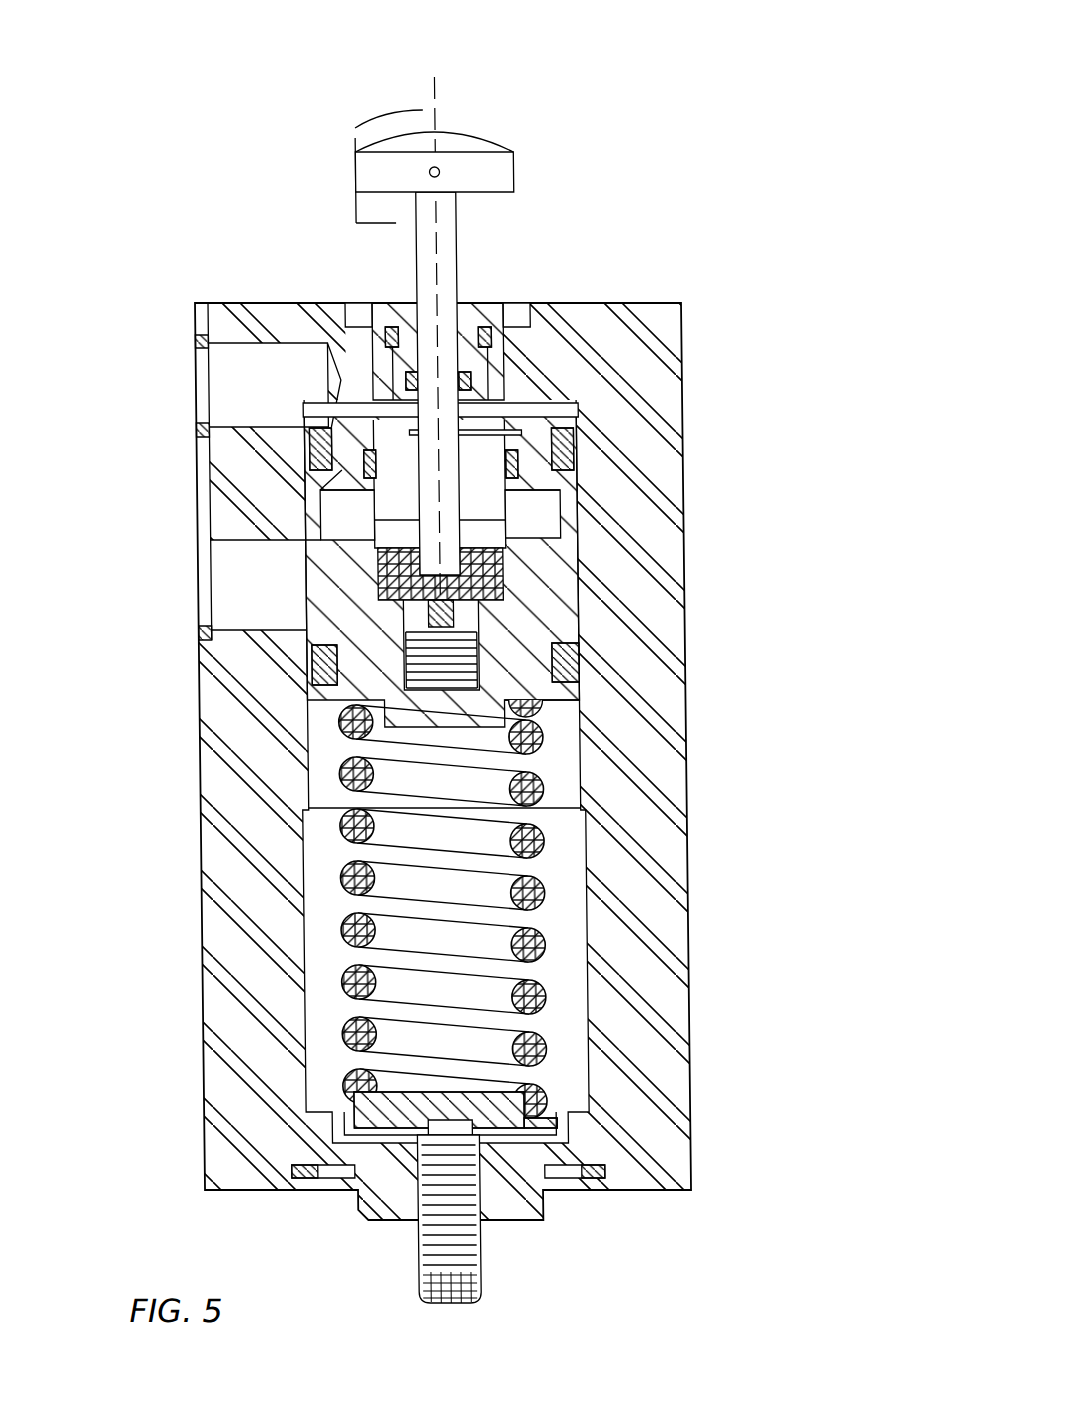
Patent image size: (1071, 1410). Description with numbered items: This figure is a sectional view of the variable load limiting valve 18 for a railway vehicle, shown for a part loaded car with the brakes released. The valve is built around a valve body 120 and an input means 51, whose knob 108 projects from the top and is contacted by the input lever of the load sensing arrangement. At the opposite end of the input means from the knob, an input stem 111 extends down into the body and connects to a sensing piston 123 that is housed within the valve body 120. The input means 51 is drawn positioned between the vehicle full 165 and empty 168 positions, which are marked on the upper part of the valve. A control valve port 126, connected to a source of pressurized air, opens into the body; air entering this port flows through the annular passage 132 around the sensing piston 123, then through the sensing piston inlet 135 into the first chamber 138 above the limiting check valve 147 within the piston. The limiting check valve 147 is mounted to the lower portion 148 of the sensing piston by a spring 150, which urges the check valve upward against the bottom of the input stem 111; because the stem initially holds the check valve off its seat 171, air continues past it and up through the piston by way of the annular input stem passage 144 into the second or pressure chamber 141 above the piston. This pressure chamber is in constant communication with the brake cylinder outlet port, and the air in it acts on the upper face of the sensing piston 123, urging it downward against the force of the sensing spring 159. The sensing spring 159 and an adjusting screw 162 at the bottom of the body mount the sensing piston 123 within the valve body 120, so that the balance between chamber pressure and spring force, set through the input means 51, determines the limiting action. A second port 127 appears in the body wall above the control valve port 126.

The variable load limiting valve 18 is at (800, 46).
The input means 51 is at (502, 106).
The knob 108 is at (512, 164).
The input stem 111 is at (463, 257).
The valve body 120 is at (690, 785).
The sensing piston 123 is at (306, 707).
The control valve port 126 is at (235, 590).
The upper port 127 is at (215, 380).
The annular passage 132 is at (495, 526).
The sensing piston inlet 135 is at (392, 510).
The first chamber 138 is at (517, 549).
The second chamber 141 is at (526, 395).
The annular input stem passage 144 is at (513, 483).
The limiting check valve 147 is at (398, 609).
The lower portion 148 is at (548, 637).
The spring 150 is at (583, 733).
The sensing spring 159 is at (342, 990).
The adjusting screw 162 is at (490, 1262).
The full position 165 is at (352, 225).
The empty position 168 is at (352, 126).
The seat 171 is at (580, 432).